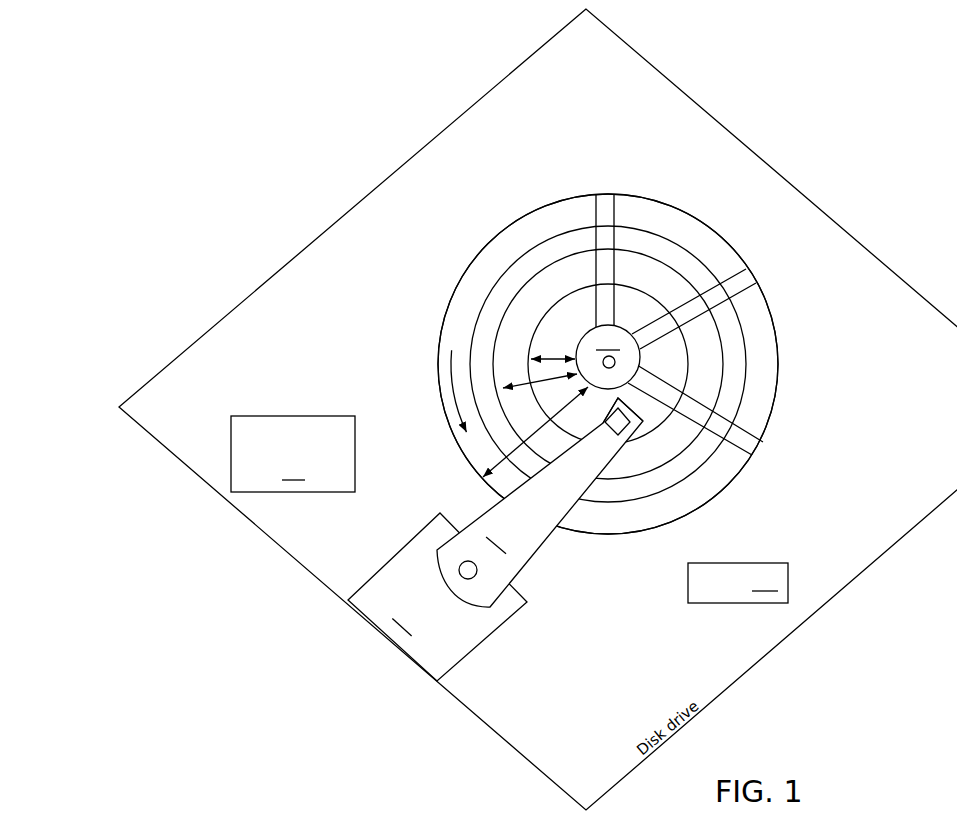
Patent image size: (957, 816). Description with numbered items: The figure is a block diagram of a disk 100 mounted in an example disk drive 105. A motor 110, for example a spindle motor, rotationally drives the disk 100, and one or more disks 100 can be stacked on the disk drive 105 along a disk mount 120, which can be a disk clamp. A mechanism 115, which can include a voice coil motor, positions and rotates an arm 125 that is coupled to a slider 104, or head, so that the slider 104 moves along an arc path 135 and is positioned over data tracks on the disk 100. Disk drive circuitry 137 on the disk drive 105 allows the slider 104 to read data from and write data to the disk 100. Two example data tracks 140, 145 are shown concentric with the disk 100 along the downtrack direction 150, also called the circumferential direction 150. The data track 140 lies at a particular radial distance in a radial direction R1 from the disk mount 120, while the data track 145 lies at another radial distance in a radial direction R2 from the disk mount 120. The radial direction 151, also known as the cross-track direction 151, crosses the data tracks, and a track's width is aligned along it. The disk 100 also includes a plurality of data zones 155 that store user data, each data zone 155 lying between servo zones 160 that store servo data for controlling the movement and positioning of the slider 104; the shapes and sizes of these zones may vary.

The disk 100 is at (778, 410).
The slider 104 is at (616, 421).
The disk drive 105 is at (790, 638).
The motor 110 is at (738, 583).
The mechanism 115 is at (437, 597).
The disk mount 120 is at (608, 357).
The arm 125 is at (540, 502).
The arc path 135 is at (727, 480).
The disk drive circuitry 137 is at (293, 454).
The data track 140 is at (502, 297).
The data track 145 is at (700, 363).
The downtrack direction 150 is at (450, 375).
The radial direction 151 is at (490, 458).
The data zone 155 is at (696, 240).
The servo zone 160 is at (604, 196).
The radial direction R1 is at (549, 381).
The radial direction R2 is at (555, 356).